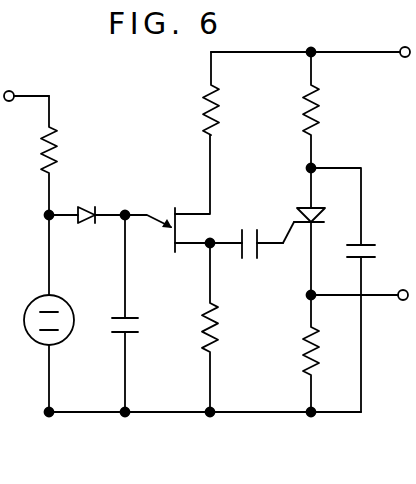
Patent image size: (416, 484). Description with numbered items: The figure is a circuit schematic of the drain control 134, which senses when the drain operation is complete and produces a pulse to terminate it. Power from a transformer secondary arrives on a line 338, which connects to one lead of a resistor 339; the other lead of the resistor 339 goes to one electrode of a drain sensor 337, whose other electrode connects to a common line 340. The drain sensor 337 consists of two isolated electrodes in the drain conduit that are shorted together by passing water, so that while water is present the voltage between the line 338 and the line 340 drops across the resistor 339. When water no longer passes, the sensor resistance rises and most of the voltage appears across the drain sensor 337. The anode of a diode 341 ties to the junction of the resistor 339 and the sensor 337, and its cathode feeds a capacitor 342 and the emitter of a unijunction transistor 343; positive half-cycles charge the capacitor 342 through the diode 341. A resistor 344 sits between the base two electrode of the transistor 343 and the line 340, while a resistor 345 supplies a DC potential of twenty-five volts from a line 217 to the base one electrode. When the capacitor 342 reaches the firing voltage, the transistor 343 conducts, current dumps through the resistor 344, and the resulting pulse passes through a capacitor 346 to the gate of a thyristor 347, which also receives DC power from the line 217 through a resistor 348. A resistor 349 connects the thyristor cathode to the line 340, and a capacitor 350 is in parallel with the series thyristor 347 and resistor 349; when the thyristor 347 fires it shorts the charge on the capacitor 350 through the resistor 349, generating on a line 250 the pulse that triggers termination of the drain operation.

The drain control 134 is at (352, 46).
The line 217 is at (356, 55).
The line 250 is at (386, 298).
The drain sensor 337 is at (58, 298).
The line 338 is at (30, 97).
The resistor 339 is at (56, 131).
The line 340 is at (240, 412).
The diode 341 is at (86, 206).
The capacitor 342 is at (135, 334).
The unijunction transistor 343 is at (167, 206).
The resistor 344 is at (218, 316).
The resistor 345 is at (219, 105).
The capacitor 346 is at (258, 256).
The thyristor 347 is at (300, 207).
The resistor 348 is at (318, 105).
The resistor 349 is at (302, 352).
The capacitor 350 is at (364, 245).